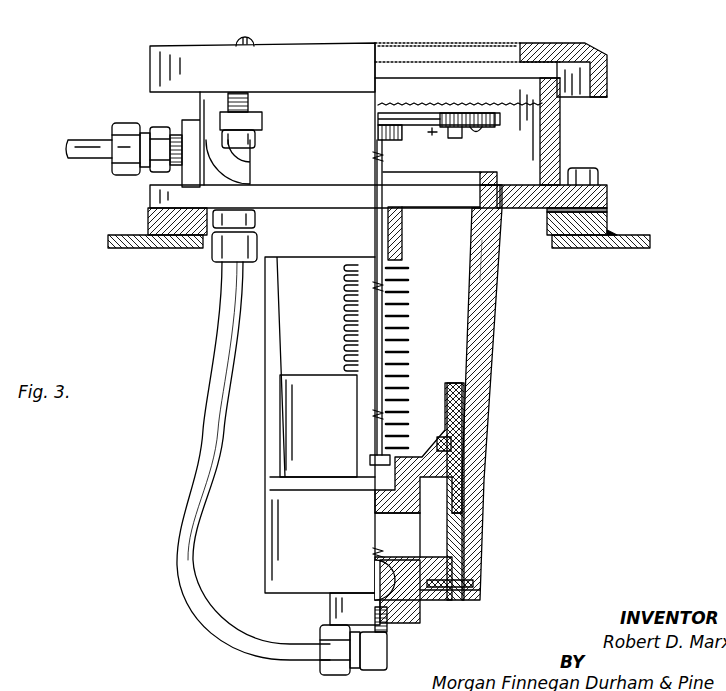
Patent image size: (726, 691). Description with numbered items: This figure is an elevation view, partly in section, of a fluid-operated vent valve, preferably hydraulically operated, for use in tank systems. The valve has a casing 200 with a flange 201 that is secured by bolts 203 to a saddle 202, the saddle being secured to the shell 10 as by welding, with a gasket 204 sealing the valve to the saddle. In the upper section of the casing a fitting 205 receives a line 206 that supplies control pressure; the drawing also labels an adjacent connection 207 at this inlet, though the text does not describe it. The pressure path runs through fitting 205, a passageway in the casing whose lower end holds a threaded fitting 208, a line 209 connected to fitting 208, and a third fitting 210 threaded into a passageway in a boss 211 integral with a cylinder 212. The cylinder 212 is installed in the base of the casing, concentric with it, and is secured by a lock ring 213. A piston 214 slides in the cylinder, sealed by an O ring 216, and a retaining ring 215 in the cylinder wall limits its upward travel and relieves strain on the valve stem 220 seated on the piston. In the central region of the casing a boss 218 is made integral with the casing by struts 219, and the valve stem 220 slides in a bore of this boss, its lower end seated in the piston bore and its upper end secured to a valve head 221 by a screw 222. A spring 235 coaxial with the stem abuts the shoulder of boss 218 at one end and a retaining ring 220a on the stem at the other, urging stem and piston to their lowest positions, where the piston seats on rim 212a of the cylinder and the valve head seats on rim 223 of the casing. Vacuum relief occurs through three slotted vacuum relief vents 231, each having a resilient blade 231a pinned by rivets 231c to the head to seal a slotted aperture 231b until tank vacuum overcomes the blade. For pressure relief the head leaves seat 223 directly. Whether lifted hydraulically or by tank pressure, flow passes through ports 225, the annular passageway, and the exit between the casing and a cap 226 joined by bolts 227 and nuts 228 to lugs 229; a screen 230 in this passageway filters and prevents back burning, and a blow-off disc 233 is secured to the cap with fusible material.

The shell 10 is at (628, 248).
The casing 200 is at (490, 350).
The flange 201 is at (607, 198).
The saddle 202 is at (608, 224).
The bolts 203 is at (584, 168).
The gasket 204 is at (550, 212).
The fitting 205 is at (155, 170).
The line 206 is at (93, 138).
The pipe fitting 207 is at (190, 118).
The fitting 208 is at (215, 254).
The line 209 is at (203, 470).
The third fitting 210 is at (388, 658).
The boss 211 is at (410, 622).
The cylinder 212 is at (452, 538).
The rim 212a is at (418, 560).
The lock ring 213 is at (462, 588).
The piston 214 is at (300, 456).
The retaining ring 215 is at (455, 395).
The O ring 216 is at (468, 450).
The boss 218 is at (400, 252).
The struts 219 is at (486, 256).
The valve stem 220 is at (374, 234).
The retaining ring 220a is at (380, 456).
The valve head 221 is at (540, 122).
The screw 222 is at (378, 116).
The rim 223 is at (490, 176).
The ports 225 is at (292, 324).
The cap 226 is at (608, 74).
The bolts 227 is at (246, 38).
The nuts 228 is at (256, 138).
The lugs 229 is at (252, 120).
The screen 230 is at (441, 104).
The slotted vacuum relief vents 231 is at (458, 114).
The resilient blade 231a is at (475, 131).
The slotted aperture 231b is at (436, 132).
The rivets 231c is at (455, 140).
The blow-off disc 233 is at (450, 44).
The spring 235 is at (346, 306).